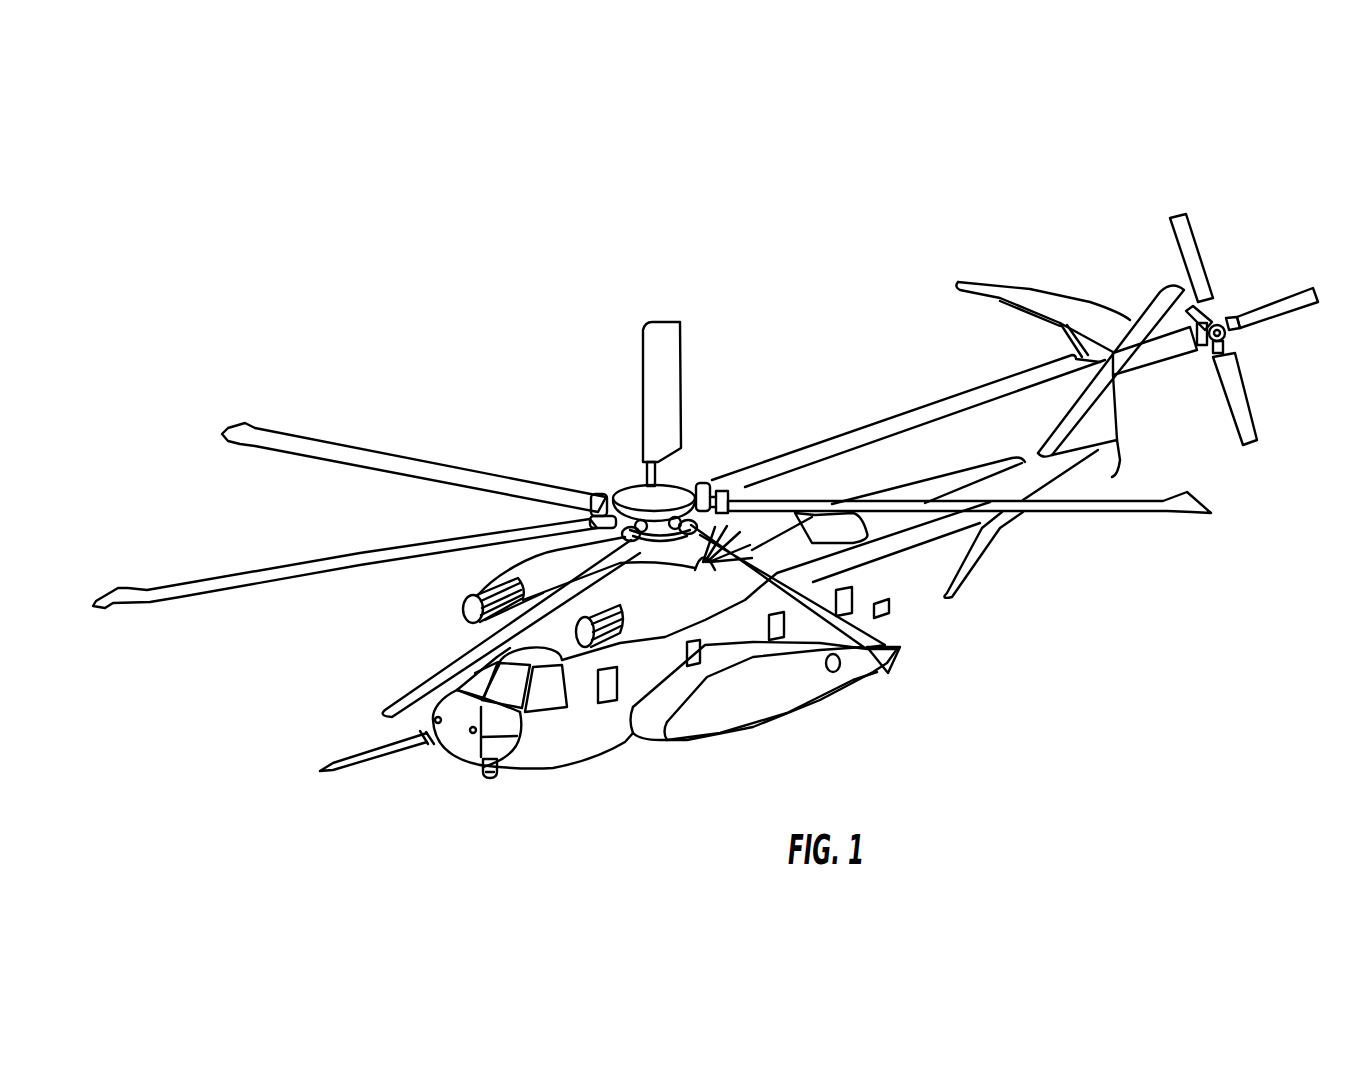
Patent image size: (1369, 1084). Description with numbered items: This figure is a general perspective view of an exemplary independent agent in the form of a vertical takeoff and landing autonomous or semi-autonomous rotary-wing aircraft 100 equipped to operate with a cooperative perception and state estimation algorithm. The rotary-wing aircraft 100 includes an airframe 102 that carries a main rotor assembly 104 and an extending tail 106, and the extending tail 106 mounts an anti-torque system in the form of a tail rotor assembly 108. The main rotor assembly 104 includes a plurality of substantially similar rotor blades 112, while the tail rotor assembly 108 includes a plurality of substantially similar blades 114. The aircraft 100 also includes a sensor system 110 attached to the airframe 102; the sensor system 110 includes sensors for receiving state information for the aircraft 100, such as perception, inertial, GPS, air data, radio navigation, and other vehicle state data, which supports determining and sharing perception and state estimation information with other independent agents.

The rotary-wing aircraft 100 is at (850, 347).
The airframe 102 is at (908, 595).
The main rotor assembly 104 is at (598, 462).
The extending tail 106 is at (1113, 407).
The tail rotor assembly 108 is at (1240, 244).
The sensor system 110 is at (488, 788).
The rotor blades 112 is at (340, 449).
The blades 114 is at (1243, 402).